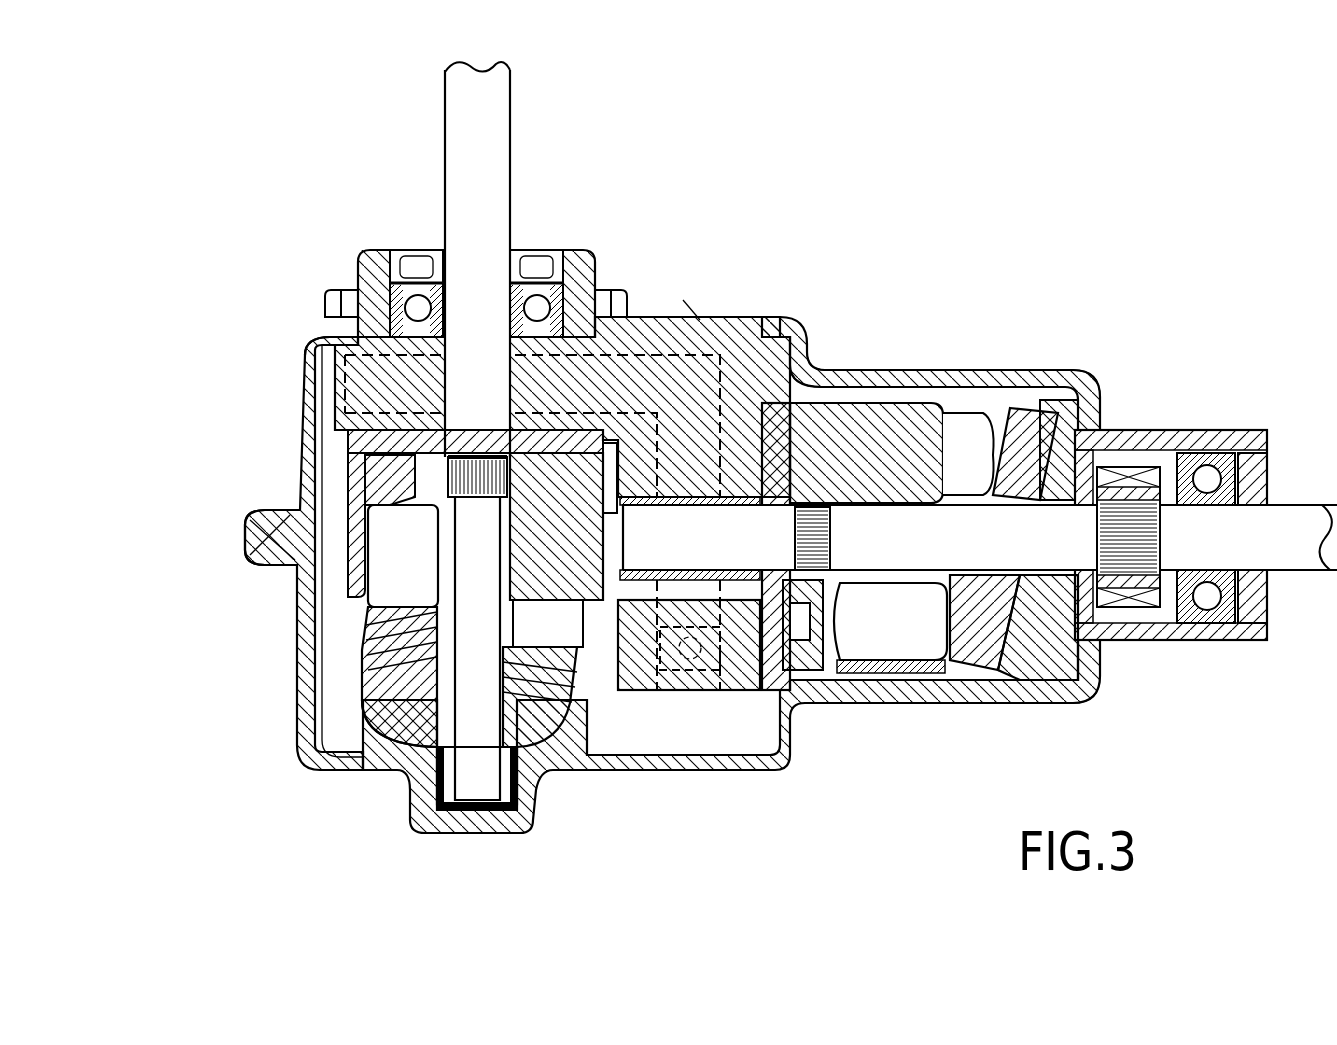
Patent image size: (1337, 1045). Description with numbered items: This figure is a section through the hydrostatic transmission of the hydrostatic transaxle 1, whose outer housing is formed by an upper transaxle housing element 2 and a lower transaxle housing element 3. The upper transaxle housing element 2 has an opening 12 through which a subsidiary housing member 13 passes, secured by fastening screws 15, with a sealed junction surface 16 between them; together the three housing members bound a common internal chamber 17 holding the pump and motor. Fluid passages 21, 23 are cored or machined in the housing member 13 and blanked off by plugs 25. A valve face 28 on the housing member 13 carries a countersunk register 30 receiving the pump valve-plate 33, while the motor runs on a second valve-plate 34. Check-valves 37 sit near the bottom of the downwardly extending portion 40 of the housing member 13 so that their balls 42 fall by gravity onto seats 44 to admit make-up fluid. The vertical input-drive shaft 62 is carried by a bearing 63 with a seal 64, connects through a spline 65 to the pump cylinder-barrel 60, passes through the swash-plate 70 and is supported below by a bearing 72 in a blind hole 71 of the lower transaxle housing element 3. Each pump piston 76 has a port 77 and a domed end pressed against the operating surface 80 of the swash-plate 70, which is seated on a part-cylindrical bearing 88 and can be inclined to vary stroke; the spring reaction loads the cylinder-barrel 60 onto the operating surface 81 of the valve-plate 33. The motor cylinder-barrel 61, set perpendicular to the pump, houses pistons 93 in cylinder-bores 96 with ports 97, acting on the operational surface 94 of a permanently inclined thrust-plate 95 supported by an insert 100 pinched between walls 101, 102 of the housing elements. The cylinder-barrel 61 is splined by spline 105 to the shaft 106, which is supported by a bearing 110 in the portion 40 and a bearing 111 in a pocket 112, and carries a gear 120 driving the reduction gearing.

The hydrostatic transaxle 1 is at (1273, 450).
The upper transaxle housing element 2 is at (306, 400).
The lower transaxle housing element 3 is at (247, 560).
The opening 12 is at (597, 267).
The housing member 13 is at (377, 292).
The fastening screws 15 is at (337, 292).
The junction surface 16 is at (780, 317).
The internal chamber 17 is at (358, 648).
The fluid passage 21 is at (700, 340).
The fluid passage 23 is at (783, 337).
The plugs 25 is at (343, 363).
The valve face 28 is at (617, 350).
The countersunk register 30 is at (313, 410).
The valve-plate 33 is at (345, 440).
The valve-plate 34 is at (822, 385).
The check-valves 37 is at (717, 717).
The downwardly extending portion 40 is at (626, 703).
The balls 42 is at (797, 727).
The seats 44 is at (692, 667).
The pump cylinder-barrel 60 is at (365, 555).
The motor cylinder-barrel 61 is at (915, 420).
The input-drive shaft 62 is at (500, 131).
The bearing 63 is at (583, 250).
The seal 64 is at (523, 260).
The spline 65 is at (470, 460).
The swash-plate 70 is at (430, 700).
The blind hole 71 is at (530, 833).
The bearing 72 is at (410, 807).
The piston 76 is at (420, 596).
The port 77 is at (357, 478).
The operating surface 80 is at (365, 635).
The operating surface 81 is at (408, 470).
The part-cylindrical bearing 88 is at (557, 700).
The pistons 93 is at (972, 420).
The operational surface 94 is at (1020, 375).
The thrust-plate 95 is at (1075, 450).
The cylinder-bore 96 is at (880, 658).
The port 97 is at (810, 622).
The insert 100 is at (1037, 647).
The wall 101 is at (1085, 400).
The wall 102 is at (1087, 670).
The spline 105 is at (820, 547).
The shaft 106 is at (1292, 553).
The bearing 110 is at (820, 372).
The bearing 111 is at (1193, 453).
The pocket 112 is at (1237, 613).
The gear 120 is at (1143, 593).